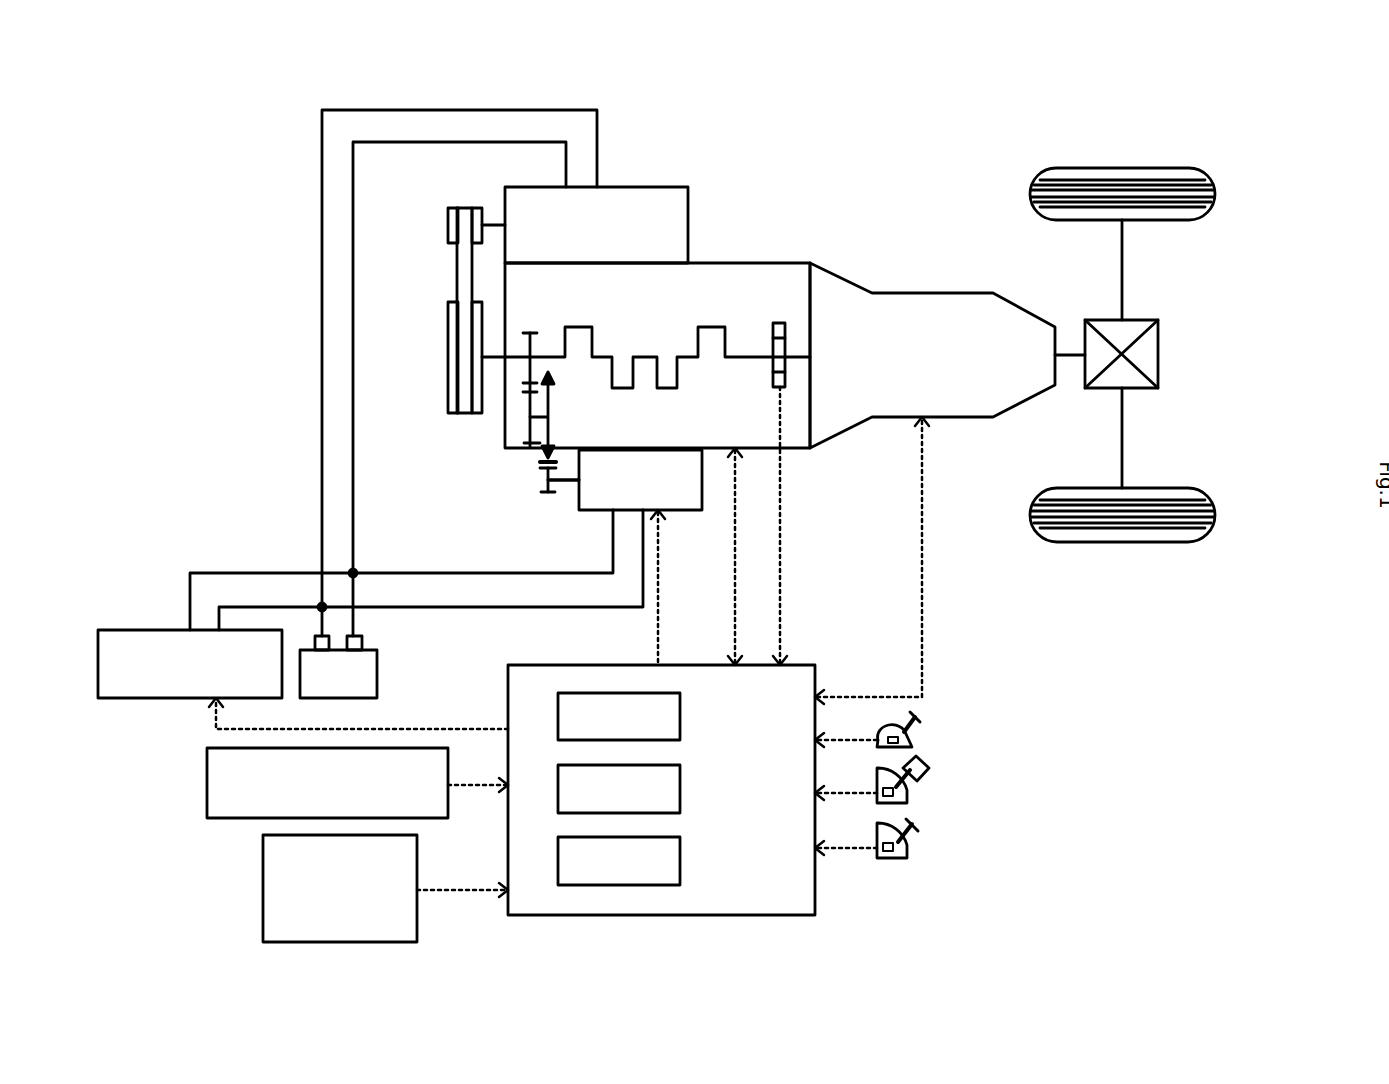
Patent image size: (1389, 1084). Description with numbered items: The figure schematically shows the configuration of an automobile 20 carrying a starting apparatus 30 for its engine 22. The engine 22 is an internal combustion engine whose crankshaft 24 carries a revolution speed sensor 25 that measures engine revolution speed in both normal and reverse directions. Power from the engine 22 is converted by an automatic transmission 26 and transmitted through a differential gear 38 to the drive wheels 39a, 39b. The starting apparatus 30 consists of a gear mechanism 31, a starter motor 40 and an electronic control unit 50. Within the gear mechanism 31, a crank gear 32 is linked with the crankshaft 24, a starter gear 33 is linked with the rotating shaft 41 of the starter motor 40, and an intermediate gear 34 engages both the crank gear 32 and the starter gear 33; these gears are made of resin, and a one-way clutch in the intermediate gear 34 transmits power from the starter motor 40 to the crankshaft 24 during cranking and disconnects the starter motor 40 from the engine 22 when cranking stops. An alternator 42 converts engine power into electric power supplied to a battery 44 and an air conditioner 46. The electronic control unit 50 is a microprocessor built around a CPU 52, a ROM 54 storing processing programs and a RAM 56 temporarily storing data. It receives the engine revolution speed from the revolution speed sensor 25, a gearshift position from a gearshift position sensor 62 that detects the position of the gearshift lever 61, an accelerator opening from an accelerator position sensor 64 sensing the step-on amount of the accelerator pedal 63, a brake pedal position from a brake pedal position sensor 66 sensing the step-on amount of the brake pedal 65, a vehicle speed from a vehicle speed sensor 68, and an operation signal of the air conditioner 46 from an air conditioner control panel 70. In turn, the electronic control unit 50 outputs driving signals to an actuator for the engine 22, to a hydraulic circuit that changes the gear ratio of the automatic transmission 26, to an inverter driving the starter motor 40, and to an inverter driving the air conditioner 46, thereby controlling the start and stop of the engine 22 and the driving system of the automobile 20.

The automobile 20 is at (782, 106).
The engine 22 is at (733, 262).
The crankshaft 24 is at (751, 372).
The revolution speed sensor 25 is at (778, 322).
The automatic transmission 26 is at (923, 292).
The starting apparatus 30 is at (524, 637).
The gear mechanism 31 is at (508, 468).
The crank gear 32 is at (534, 333).
The starter gear 33 is at (543, 480).
The intermediate gear 34 is at (553, 403).
The differential gear 38 is at (1160, 357).
The drive wheel 39a is at (1118, 167).
The drive wheel 39b is at (1124, 545).
The starter motor 40 is at (692, 512).
The rotating shaft 41 is at (571, 487).
The alternator 42 is at (632, 186).
The battery 44 is at (377, 673).
The air conditioner 46 is at (97, 667).
The electronic control unit 50 is at (712, 790).
The CPU 52 is at (680, 717).
The ROM 54 is at (680, 789).
The RAM 56 is at (680, 861).
The gearshift lever 61 is at (920, 710).
The gearshift position sensor 62 is at (905, 735).
The accelerator pedal 63 is at (918, 772).
The accelerator position sensor 64 is at (905, 790).
The brake pedal 65 is at (918, 828).
The brake pedal position sensor 66 is at (905, 845).
The vehicle speed sensor 68 is at (263, 890).
The air conditioner control panel 70 is at (207, 778).